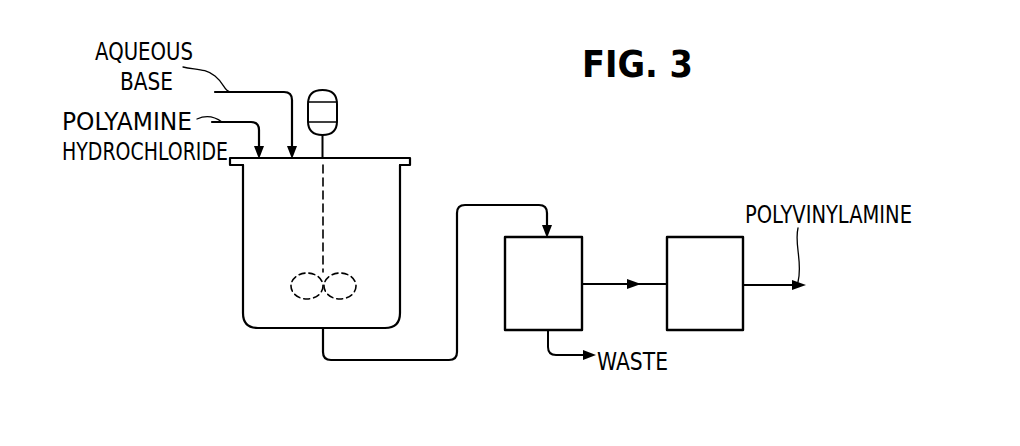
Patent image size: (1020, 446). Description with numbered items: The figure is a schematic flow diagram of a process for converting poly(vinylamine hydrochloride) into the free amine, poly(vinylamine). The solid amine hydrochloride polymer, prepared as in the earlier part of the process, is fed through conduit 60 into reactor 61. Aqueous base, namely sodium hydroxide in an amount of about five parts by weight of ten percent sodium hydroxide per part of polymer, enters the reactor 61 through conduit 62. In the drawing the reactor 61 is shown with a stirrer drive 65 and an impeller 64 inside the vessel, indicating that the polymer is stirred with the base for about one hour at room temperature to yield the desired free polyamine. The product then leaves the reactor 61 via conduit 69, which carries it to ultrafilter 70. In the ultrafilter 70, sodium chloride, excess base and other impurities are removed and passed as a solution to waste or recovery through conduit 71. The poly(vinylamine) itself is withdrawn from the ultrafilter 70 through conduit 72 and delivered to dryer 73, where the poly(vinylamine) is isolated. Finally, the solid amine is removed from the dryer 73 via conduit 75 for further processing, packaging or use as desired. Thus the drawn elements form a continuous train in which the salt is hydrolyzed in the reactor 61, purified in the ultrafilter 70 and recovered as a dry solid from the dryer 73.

The conduit 60 is at (238, 122).
The reactor 61 is at (243, 228).
The conduit 62 is at (286, 92).
The stirrer impeller 64 is at (333, 273).
The stirrer motor 65 is at (336, 103).
The conduit 69 is at (442, 362).
The ultrafilter 70 is at (580, 237).
The conduit 71 is at (565, 357).
The conduit 72 is at (628, 288).
The dryer 73 is at (712, 237).
The conduit 75 is at (765, 288).